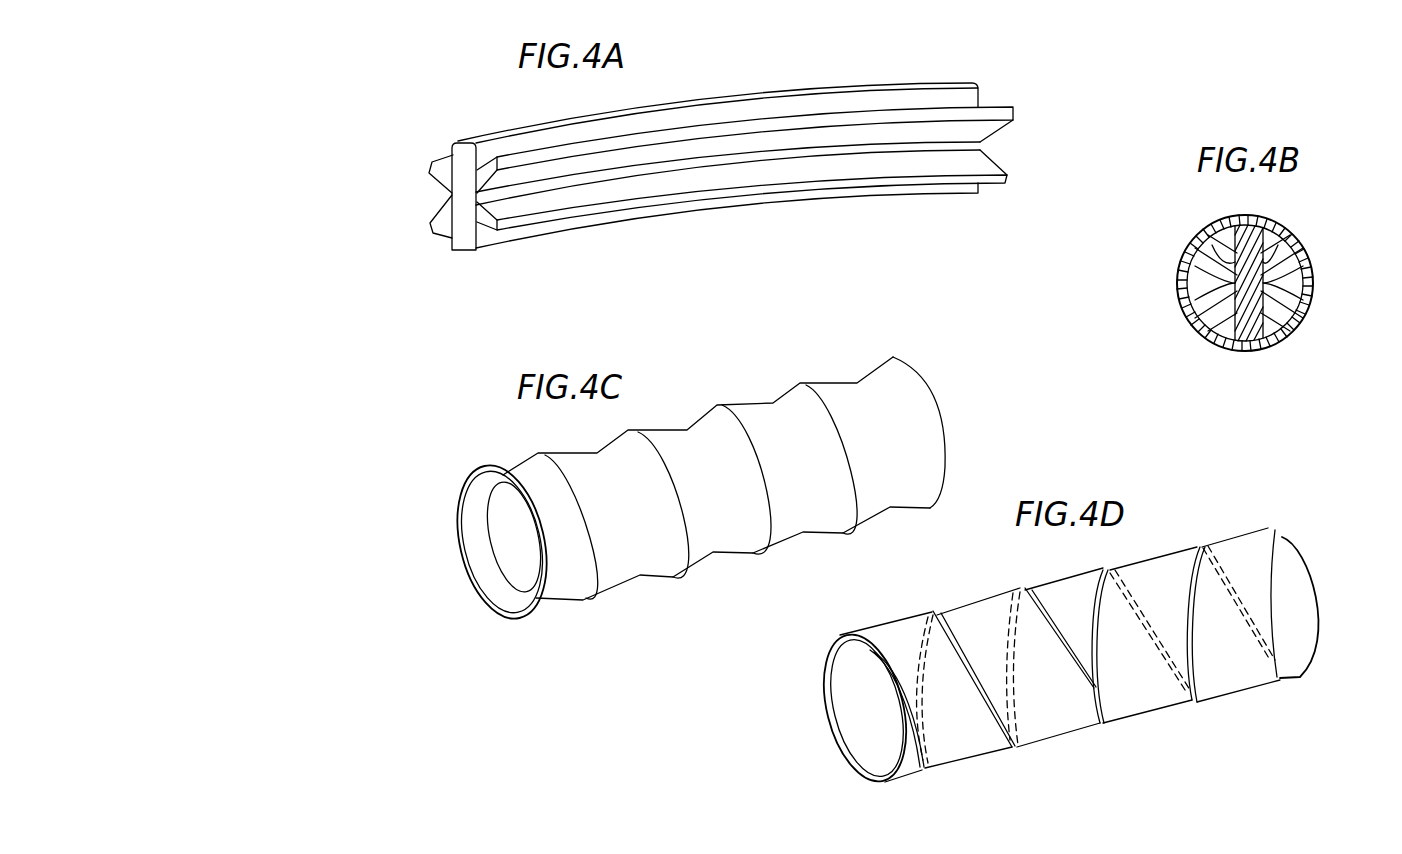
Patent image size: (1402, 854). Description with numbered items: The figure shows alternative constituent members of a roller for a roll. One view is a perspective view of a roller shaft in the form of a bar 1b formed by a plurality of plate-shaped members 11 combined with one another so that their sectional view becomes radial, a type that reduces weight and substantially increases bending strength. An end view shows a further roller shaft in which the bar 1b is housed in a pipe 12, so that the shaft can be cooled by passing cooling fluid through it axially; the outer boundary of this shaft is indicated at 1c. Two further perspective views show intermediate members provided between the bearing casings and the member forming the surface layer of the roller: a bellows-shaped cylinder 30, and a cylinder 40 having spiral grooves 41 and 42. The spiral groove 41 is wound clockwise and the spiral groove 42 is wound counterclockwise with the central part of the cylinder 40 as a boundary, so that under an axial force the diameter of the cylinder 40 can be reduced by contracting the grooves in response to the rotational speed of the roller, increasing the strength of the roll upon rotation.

In FIG. 4A, the bar 1b is at (852, 198).
In FIG. 4B, the bar 1b is at (1248, 334).
In FIG. 4B, the outer tube 1c is at (1313, 243).
In FIG. 4A, the plate-shaped members 11 is at (435, 174).
In FIG. 4B, the plate-shaped members 11 is at (1232, 283).
In FIG. 4B, the pipe 12 is at (1301, 326).
In FIG. 4C, the bellows-shaped cylinder 30 is at (698, 568).
In FIG. 4D, the cylinder 40 is at (1237, 696).
In FIG. 4D, the spiral groove 41 is at (1072, 660).
In FIG. 4D, the spiral groove 42 is at (1097, 655).